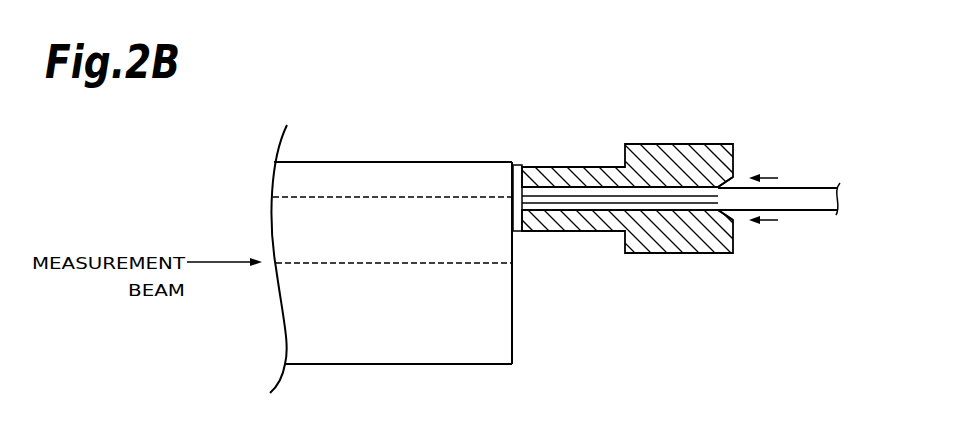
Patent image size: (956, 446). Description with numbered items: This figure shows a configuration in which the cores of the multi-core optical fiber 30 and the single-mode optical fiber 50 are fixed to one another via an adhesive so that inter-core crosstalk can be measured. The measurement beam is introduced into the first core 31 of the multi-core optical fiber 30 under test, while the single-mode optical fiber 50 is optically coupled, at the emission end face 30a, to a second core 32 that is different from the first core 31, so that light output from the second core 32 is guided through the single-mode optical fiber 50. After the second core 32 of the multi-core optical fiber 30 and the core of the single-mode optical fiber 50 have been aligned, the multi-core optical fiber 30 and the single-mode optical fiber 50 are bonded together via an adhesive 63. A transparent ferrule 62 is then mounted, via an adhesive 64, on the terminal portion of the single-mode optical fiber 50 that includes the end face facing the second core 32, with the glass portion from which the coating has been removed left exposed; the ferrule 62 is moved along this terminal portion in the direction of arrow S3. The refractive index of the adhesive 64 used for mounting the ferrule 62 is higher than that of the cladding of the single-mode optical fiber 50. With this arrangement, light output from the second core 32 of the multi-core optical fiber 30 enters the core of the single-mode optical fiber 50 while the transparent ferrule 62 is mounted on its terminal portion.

The multi-core optical fiber 30 is at (372, 172).
The emission end face 30a is at (513, 340).
The first core 31 is at (442, 263).
The second core 32 is at (436, 197).
The single-mode optical fiber 50 is at (837, 188).
The transparent ferrule 62 is at (688, 143).
The adhesive 63 is at (520, 232).
The adhesive 64 is at (735, 177).
The arrow S3 is at (772, 178).